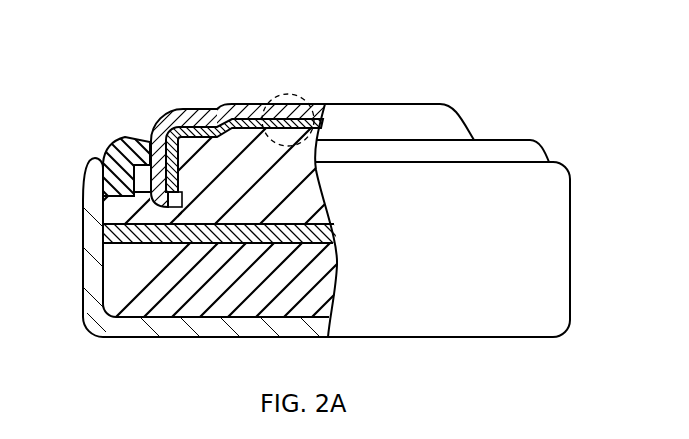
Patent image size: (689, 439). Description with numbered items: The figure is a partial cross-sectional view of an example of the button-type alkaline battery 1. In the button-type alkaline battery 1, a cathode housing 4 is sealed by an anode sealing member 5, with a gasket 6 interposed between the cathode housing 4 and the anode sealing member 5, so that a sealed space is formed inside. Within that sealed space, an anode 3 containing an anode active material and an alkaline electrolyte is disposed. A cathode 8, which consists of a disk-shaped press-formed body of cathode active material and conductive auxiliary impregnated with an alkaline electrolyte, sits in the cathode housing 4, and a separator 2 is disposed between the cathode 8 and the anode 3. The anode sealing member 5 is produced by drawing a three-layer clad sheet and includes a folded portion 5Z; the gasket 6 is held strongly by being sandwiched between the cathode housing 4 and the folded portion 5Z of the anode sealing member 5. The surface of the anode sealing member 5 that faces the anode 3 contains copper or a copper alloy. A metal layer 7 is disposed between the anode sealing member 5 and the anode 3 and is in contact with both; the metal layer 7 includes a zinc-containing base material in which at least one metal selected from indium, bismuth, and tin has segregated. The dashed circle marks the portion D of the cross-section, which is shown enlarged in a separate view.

The button-type alkaline battery 1 is at (515, 91).
The separator 2 is at (103, 238).
The anode 3 is at (210, 139).
The cathode housing 4 is at (90, 268).
The anode sealing member 5 is at (183, 108).
The folded portion 5Z is at (100, 195).
The gasket 6 is at (130, 137).
The metal layer 7 is at (247, 119).
The cathode 8 is at (92, 299).
The portion D is at (303, 97).